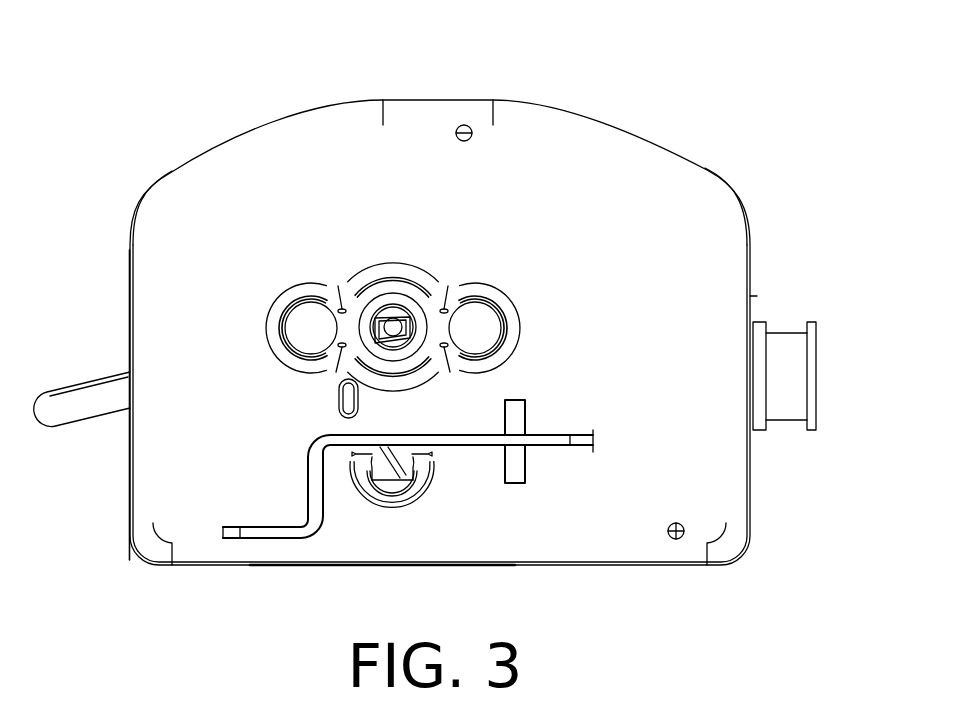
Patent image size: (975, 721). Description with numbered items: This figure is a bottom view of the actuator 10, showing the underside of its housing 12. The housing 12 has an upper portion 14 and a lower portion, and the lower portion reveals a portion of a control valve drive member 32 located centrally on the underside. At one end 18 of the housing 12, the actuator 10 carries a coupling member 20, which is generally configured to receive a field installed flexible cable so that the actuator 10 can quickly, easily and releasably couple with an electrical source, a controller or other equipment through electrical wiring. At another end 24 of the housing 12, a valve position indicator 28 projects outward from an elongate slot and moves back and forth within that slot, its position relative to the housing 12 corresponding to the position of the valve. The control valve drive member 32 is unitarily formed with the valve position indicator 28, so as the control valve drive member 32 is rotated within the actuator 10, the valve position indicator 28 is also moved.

The actuator 10 is at (652, 77).
The housing 12 is at (721, 139).
The upper portion 14 is at (703, 225).
The one end 18 is at (750, 296).
The coupling member 20 is at (816, 355).
The another end 24 is at (128, 328).
The valve position indicator 28 is at (84, 425).
The control valve drive member 32 is at (394, 321).